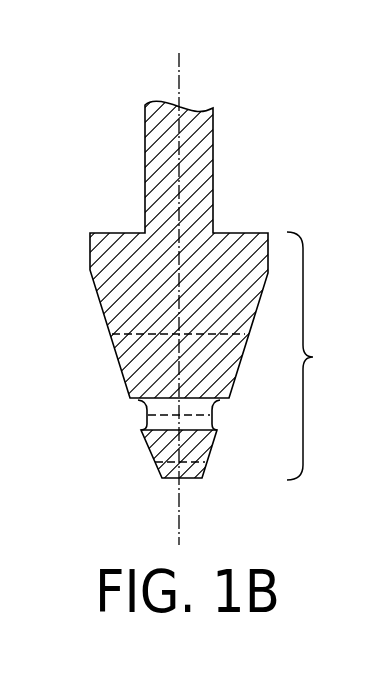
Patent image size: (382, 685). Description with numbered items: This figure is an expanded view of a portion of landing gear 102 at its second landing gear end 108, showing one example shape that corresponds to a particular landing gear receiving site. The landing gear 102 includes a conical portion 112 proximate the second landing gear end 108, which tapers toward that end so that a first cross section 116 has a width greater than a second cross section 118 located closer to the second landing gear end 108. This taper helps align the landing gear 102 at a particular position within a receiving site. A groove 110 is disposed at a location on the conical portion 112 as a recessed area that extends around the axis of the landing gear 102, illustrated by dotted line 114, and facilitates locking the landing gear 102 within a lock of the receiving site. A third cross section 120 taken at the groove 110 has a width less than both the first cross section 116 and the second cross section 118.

The landing gear 102 is at (100, 183).
The second landing gear end 108 is at (212, 451).
The groove 110 is at (148, 407).
The conical portion 112 is at (201, 373).
The dotted line 114 is at (179, 67).
The first cross section 116 is at (128, 332).
The second cross section 118 is at (164, 464).
The third cross section 120 is at (152, 418).